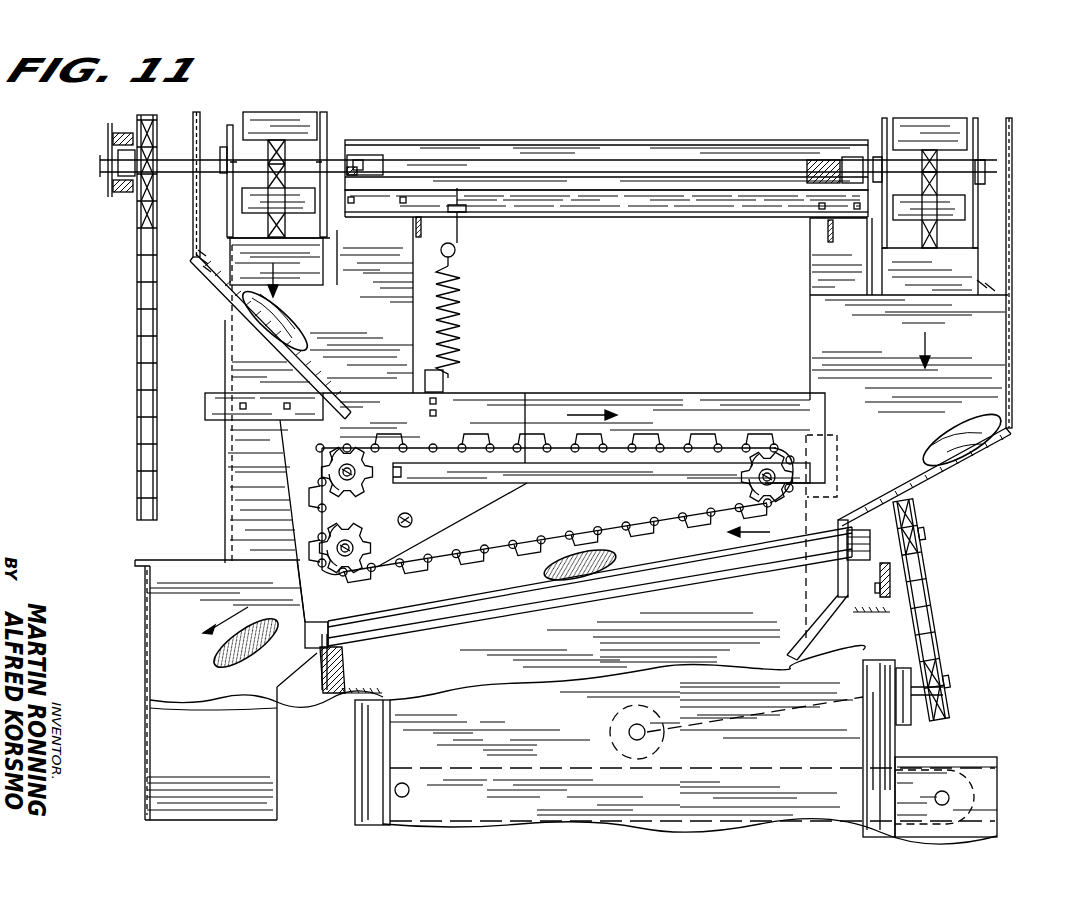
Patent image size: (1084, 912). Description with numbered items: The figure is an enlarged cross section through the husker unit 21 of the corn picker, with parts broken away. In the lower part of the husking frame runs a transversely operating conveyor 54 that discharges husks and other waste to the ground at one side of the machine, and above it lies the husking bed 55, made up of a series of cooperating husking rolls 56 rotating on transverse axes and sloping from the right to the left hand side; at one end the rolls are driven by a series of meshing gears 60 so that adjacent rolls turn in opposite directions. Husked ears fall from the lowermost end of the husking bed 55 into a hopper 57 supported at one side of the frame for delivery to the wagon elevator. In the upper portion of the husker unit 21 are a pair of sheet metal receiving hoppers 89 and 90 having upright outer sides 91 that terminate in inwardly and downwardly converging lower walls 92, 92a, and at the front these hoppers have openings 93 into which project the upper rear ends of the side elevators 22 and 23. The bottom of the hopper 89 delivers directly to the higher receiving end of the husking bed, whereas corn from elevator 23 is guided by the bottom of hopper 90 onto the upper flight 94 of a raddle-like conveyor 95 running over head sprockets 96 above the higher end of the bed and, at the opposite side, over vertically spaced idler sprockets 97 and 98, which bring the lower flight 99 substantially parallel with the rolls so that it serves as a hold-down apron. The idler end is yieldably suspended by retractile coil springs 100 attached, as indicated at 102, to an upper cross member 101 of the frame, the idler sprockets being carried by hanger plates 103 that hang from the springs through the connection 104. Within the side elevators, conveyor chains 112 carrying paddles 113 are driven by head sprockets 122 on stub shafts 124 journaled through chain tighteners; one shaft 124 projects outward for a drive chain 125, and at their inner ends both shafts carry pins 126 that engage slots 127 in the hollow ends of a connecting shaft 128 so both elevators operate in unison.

The husker unit 21 is at (727, 112).
The side elevator 22 is at (927, 115).
The side elevator 23 is at (628, 173).
The transversely operating conveyor 54 is at (500, 763).
The husking bed 55 is at (527, 618).
The husking rolls 56 is at (442, 622).
The hopper 57 is at (147, 608).
The meshing gears 60 is at (842, 582).
The receiving hopper 89 is at (992, 343).
The receiving hopper 90 is at (235, 288).
The upright outer sides 91 is at (207, 223).
The lower wall 92 is at (284, 355).
The lower wall 92a is at (930, 470).
The openings 93 is at (211, 262).
The upper flight 94 is at (447, 442).
The raddle-like conveyor 95 is at (617, 431).
The head sprockets 96 is at (742, 482).
The idler sprocket 97 is at (327, 472).
The idler sprocket 98 is at (372, 542).
The lower flight 99 is at (513, 547).
The retractile coil springs 100 is at (455, 290).
The upper cross member 101 is at (618, 219).
The spring attachment 102 is at (458, 200).
The hanger plates 103 is at (443, 520).
The connection 104 is at (445, 374).
The conveyor chains 112 is at (267, 140).
The paddles 113 is at (302, 117).
The head sprockets 122 is at (268, 157).
The stub shafts 124 is at (310, 158).
The drive chain 125 is at (137, 236).
The pins 126 is at (372, 158).
The slots 127 is at (353, 176).
The connecting shaft 128 is at (560, 167).